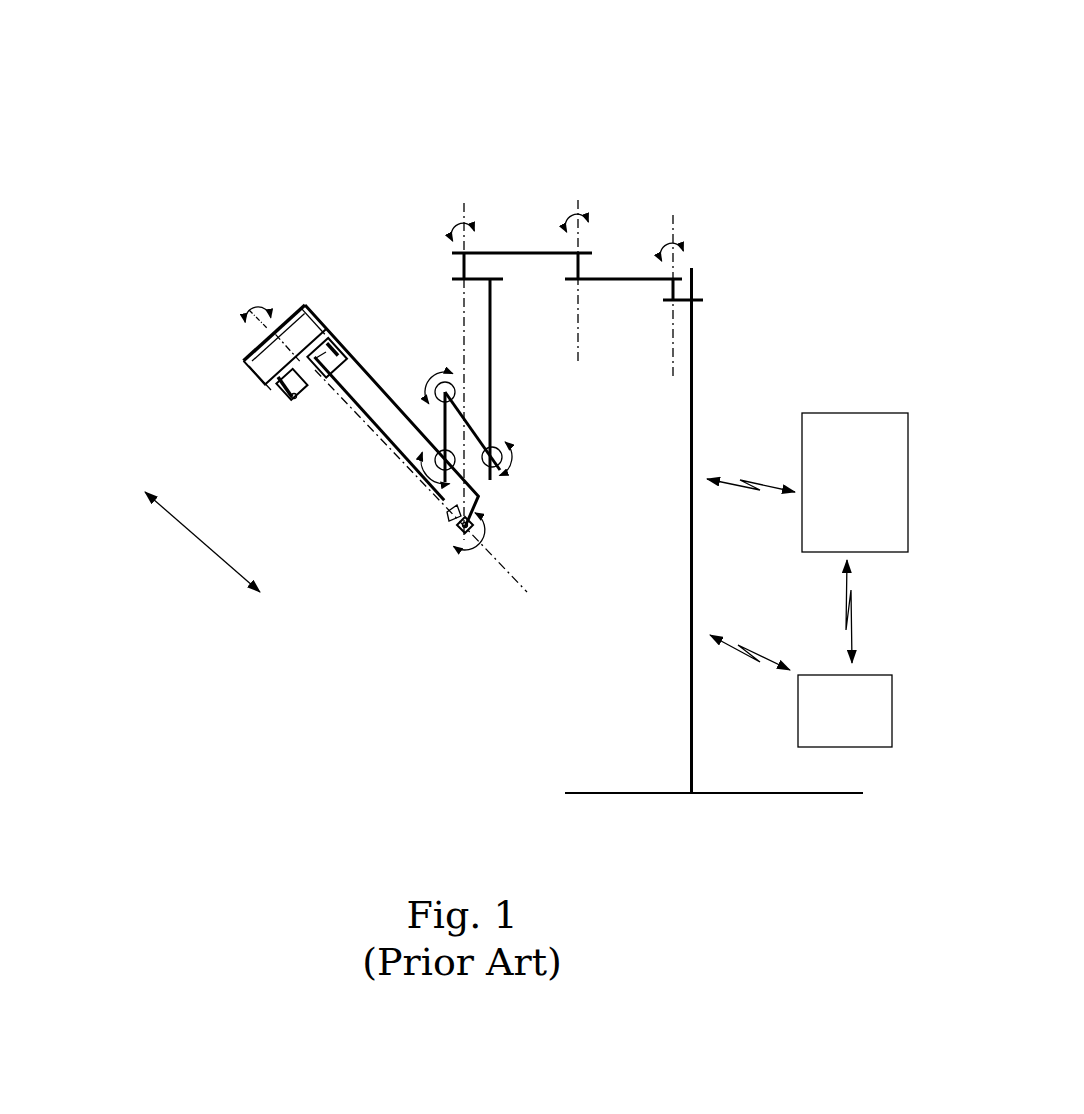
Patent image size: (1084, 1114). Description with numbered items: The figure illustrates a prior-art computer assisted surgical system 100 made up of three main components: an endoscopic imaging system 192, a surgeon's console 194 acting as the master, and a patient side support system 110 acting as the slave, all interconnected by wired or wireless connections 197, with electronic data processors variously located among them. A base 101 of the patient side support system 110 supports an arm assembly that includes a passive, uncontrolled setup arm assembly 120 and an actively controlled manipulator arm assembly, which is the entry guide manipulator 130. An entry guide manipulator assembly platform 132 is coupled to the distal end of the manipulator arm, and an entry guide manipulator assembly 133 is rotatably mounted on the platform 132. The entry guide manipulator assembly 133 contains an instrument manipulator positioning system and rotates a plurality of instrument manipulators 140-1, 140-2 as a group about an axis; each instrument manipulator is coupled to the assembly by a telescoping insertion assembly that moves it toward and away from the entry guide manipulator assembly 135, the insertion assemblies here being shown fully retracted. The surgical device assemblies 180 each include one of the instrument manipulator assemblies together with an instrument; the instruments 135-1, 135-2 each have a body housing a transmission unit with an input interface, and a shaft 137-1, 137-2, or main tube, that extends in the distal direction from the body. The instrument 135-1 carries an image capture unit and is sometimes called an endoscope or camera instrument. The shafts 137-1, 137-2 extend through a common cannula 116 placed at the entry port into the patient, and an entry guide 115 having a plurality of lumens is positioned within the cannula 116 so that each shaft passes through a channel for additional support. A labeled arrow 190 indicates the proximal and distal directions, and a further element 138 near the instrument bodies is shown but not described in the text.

The surgical system 100 is at (808, 87).
The base 101 is at (735, 530).
The patient side support system 110 is at (714, 705).
The entry guide 115 is at (447, 517).
The cannula 116 is at (455, 522).
The setup arm assembly 120 is at (472, 212).
The entry guide manipulator 130 is at (496, 224).
The entry guide manipulator assembly platform 132 is at (285, 303).
The entry guide manipulator assembly 133 is at (272, 369).
The entry guide manipulator assembly 135 is at (272, 392).
The instrument 135-1 is at (309, 408).
The instrument 135-2 is at (350, 372).
The shaft 137-1 is at (367, 450).
The shaft 137-2 is at (377, 418).
The pivot pin 138 is at (295, 399).
The instrument manipulator 140-1 is at (297, 393).
The instrument manipulator 140-2 is at (330, 350).
The surgical device assemblies 180 is at (316, 372).
The proximal-distal direction 190 is at (200, 545).
The endoscopic imaging system 192 is at (845, 711).
The surgeon's console 194 is at (843, 412).
The connections 197 is at (792, 500).